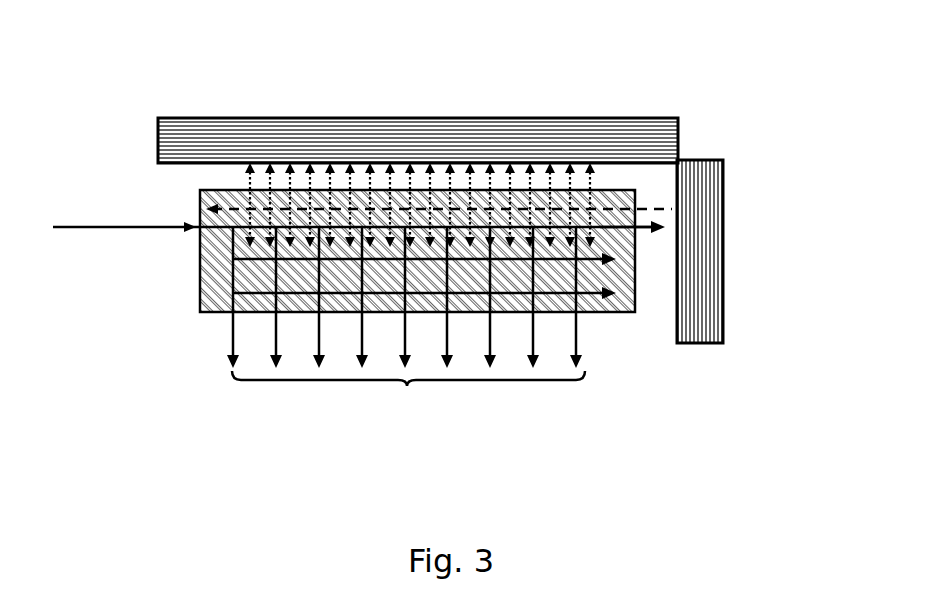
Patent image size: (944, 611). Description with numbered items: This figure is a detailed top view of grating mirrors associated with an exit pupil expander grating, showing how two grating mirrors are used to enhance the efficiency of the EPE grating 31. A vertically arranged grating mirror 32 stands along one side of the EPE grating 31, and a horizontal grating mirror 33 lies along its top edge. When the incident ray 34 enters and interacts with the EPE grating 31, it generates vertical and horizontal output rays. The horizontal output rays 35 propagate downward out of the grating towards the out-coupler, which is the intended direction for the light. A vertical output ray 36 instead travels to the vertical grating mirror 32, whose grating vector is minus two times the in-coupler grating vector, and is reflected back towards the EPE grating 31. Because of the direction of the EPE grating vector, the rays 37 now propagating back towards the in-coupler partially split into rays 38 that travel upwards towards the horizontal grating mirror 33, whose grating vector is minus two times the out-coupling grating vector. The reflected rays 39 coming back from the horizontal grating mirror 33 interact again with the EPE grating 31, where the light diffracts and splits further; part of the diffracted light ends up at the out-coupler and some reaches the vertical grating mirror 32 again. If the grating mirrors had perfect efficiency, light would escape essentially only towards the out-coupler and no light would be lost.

The EPE grating 31 is at (210, 278).
The vertical grating mirror 32 is at (700, 177).
The horizontal grating mirror 33 is at (405, 132).
The incident ray 34 is at (168, 228).
The horizontal output rays 35 is at (407, 386).
The vertical output ray 36 is at (655, 230).
The rays propagating towards the in-coupler 37 is at (650, 202).
The upward propagating rays 38 is at (598, 170).
The reflected rays 39 is at (598, 245).